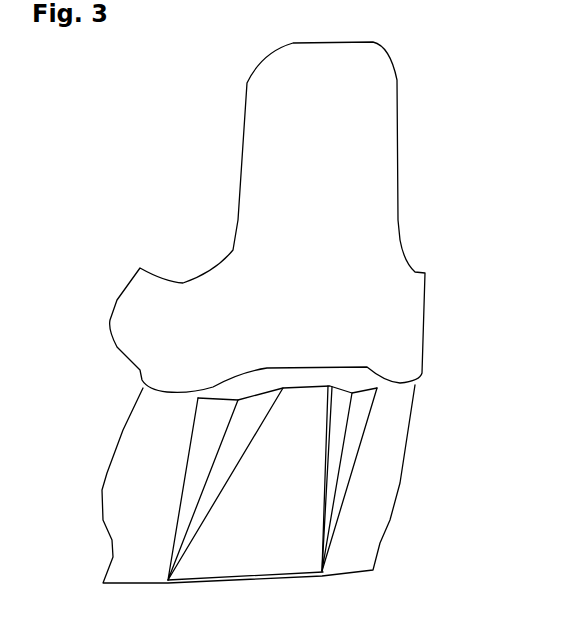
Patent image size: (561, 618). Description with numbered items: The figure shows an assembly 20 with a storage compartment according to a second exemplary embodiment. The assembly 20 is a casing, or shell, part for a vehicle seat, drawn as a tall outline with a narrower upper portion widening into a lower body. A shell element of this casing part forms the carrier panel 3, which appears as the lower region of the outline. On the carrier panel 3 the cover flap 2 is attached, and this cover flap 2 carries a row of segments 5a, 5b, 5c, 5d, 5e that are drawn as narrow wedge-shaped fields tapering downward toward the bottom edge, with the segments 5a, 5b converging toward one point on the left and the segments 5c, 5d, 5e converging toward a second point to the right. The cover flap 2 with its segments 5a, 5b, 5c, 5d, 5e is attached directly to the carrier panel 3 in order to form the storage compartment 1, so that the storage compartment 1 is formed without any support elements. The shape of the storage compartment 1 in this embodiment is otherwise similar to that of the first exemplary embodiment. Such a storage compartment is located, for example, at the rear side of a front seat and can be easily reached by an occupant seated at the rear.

The assembly 20 is at (227, 188).
The storage compartment 1 is at (278, 484).
The cover flap 2 is at (308, 505).
The carrier panel 3 is at (355, 533).
The segment 5a is at (222, 432).
The segment 5b is at (260, 430).
The segment 5c is at (302, 442).
The segment 5d is at (346, 417).
The segment 5e is at (364, 462).